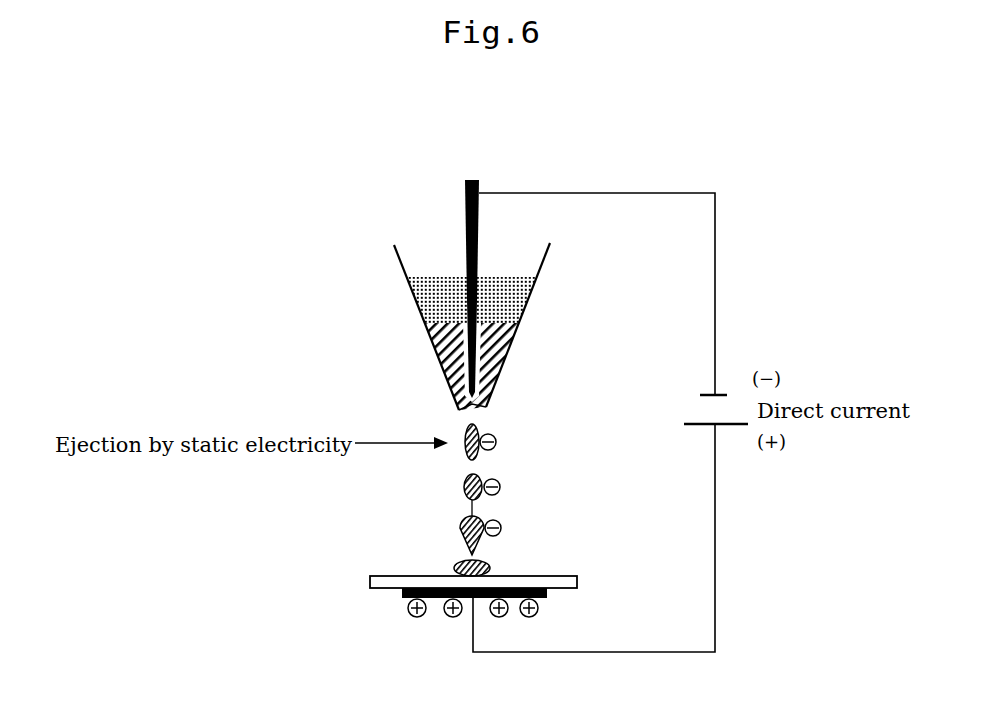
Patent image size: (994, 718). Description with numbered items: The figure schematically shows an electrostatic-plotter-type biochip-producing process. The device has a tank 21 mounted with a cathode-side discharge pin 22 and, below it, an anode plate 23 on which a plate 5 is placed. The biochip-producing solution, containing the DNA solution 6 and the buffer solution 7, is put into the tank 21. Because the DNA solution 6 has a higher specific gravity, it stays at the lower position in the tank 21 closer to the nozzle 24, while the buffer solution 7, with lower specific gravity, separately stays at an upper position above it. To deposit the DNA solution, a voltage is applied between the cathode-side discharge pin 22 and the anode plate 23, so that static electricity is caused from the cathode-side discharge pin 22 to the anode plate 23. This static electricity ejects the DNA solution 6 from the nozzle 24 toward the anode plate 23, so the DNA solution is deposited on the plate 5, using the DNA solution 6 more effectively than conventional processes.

The plate 5 is at (383, 573).
The DNA solution 6 is at (447, 367).
The buffer solution 7 is at (430, 298).
The tank 21 is at (400, 262).
The cathode-side discharge pin 22 is at (467, 223).
The anode plate 23 is at (437, 597).
The nozzle 24 is at (477, 405).